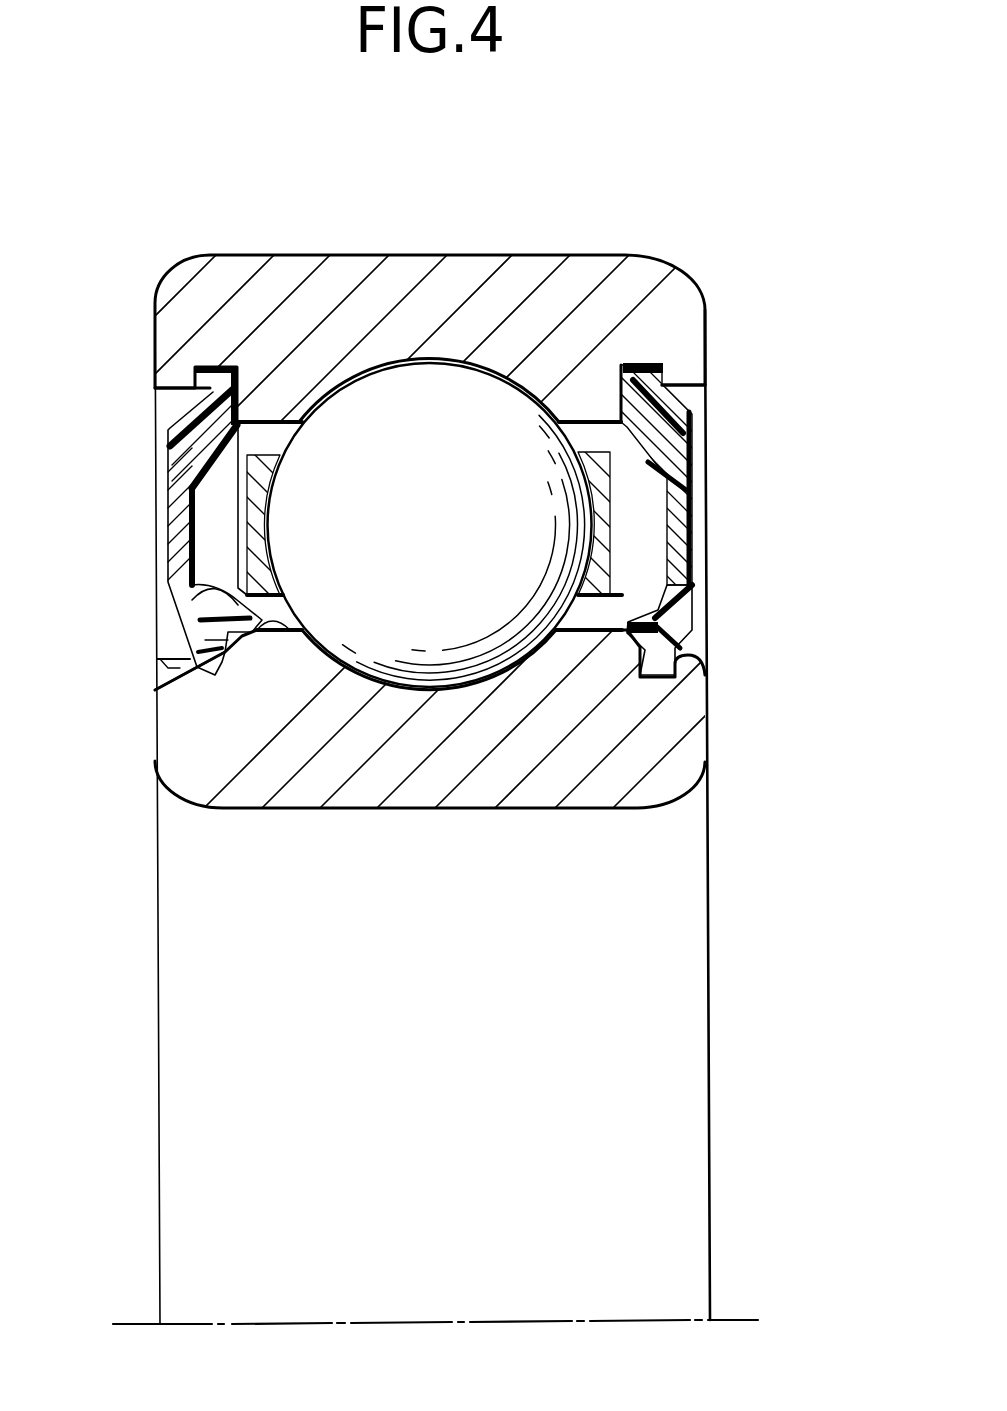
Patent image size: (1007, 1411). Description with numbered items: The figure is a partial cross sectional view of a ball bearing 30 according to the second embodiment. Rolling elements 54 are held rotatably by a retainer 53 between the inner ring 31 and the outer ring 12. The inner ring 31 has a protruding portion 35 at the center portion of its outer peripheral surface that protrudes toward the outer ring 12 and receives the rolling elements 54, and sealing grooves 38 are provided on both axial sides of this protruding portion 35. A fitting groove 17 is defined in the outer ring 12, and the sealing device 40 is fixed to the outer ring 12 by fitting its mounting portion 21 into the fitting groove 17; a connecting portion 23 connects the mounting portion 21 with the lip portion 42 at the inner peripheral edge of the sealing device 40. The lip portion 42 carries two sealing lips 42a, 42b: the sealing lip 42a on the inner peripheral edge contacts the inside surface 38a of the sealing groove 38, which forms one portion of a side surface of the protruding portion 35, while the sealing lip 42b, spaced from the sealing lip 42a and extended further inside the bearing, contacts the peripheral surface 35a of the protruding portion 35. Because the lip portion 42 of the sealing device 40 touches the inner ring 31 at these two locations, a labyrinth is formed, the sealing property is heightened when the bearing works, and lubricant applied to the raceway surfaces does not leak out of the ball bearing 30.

The outer ring 12 is at (697, 325).
The fitting groove 17 is at (670, 394).
The mounting portion 21 is at (190, 440).
The connecting portion 23 is at (177, 545).
The ball bearing 30 is at (760, 530).
The inner ring 31 is at (360, 790).
The protruding portion 35 is at (283, 683).
The peripheral surface of the protruding portion 35a is at (255, 633).
The sealing groove 38 is at (186, 675).
The inside surface of the sealing groove 38a is at (223, 682).
The sealing device 40 is at (140, 497).
The lip portion 42 is at (200, 628).
The sealing lip 42a is at (205, 650).
The sealing lip 42b is at (215, 600).
The retainer 53 is at (613, 573).
The rolling elements 54 is at (473, 652).